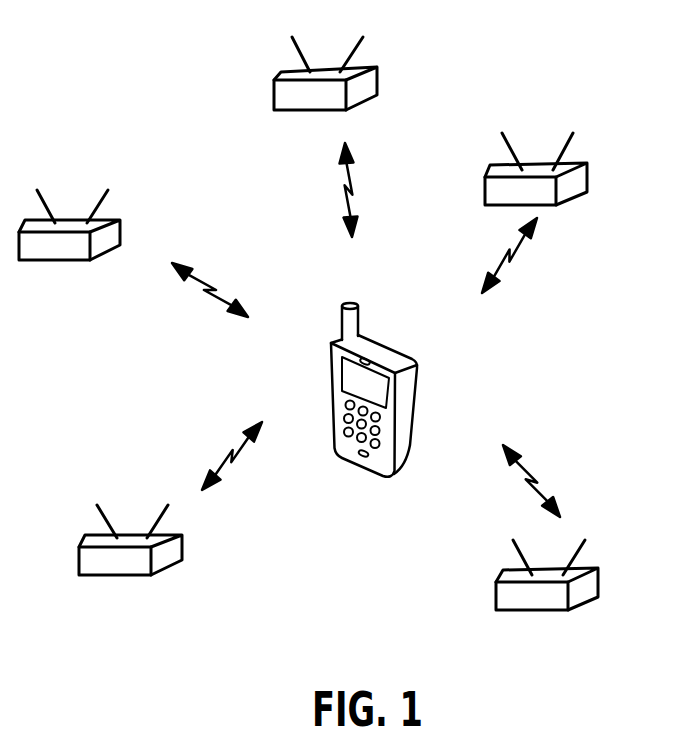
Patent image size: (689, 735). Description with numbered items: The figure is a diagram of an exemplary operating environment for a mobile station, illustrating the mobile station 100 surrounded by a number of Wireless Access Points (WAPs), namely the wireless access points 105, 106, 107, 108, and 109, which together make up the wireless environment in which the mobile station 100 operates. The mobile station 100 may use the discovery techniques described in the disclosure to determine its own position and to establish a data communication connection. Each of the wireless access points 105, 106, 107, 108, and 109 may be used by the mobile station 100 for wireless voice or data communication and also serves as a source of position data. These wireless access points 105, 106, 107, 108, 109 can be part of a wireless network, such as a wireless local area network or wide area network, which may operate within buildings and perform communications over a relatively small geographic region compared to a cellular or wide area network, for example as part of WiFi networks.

The mobile station 100 is at (417, 387).
The wireless access point 105 is at (377, 72).
The wireless access point 106 is at (588, 167).
The wireless access point 107 is at (600, 573).
The wireless access point 108 is at (183, 553).
The wireless access point 109 is at (123, 227).